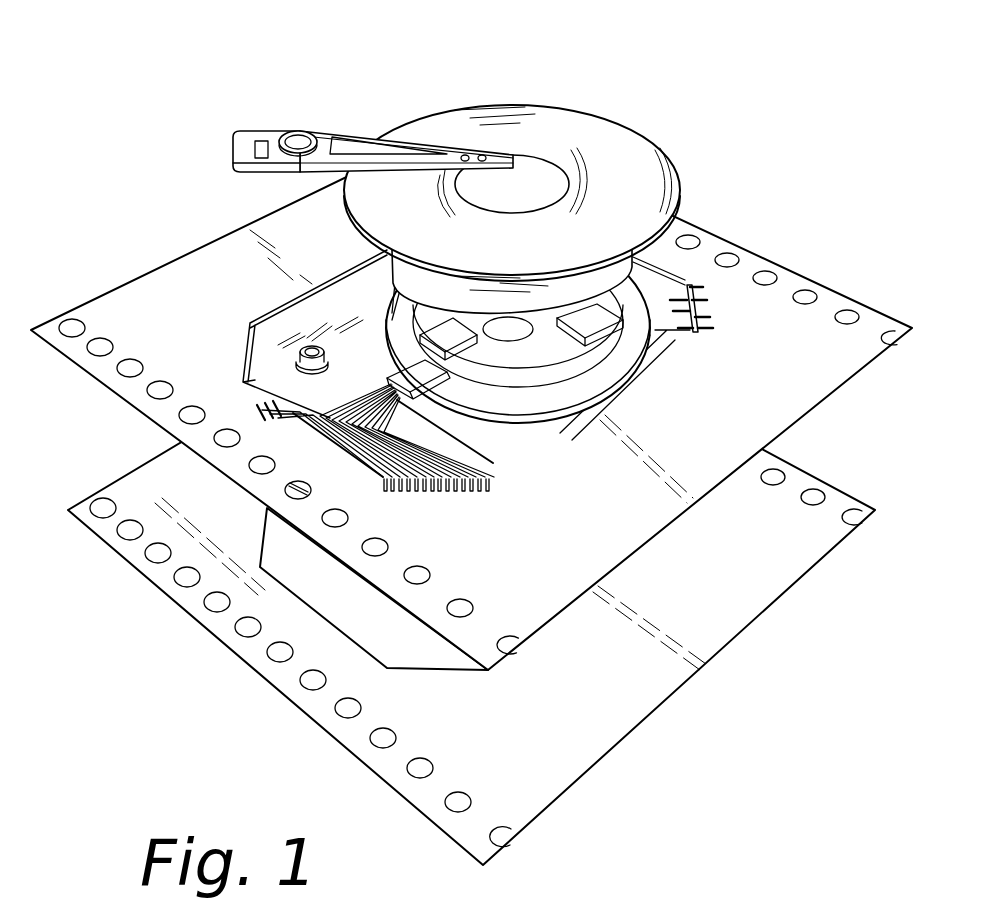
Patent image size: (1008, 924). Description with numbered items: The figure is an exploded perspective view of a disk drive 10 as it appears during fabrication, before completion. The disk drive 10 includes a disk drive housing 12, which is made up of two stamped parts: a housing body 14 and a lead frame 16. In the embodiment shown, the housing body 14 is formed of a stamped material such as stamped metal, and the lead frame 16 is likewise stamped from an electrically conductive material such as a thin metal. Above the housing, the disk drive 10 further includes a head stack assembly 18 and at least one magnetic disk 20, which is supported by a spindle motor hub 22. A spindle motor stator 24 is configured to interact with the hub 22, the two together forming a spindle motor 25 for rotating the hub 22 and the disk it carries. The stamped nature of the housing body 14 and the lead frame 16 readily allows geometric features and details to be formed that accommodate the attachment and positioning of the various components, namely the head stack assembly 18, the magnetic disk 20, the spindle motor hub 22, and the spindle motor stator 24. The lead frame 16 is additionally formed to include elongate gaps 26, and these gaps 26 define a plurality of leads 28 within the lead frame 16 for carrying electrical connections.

The disk drive 10 is at (471, 433).
The disk drive housing 12 is at (471, 492).
The housing body 14 is at (147, 475).
The lead frame 16 is at (145, 408).
The head stack assembly 18 is at (321, 137).
The magnetic disk 20 is at (427, 122).
The spindle motor hub 22 is at (640, 338).
The spindle motor stator 24 is at (587, 290).
The spindle motor 25 is at (585, 328).
The elongate gaps 26 is at (703, 273).
The leads 28 is at (690, 293).